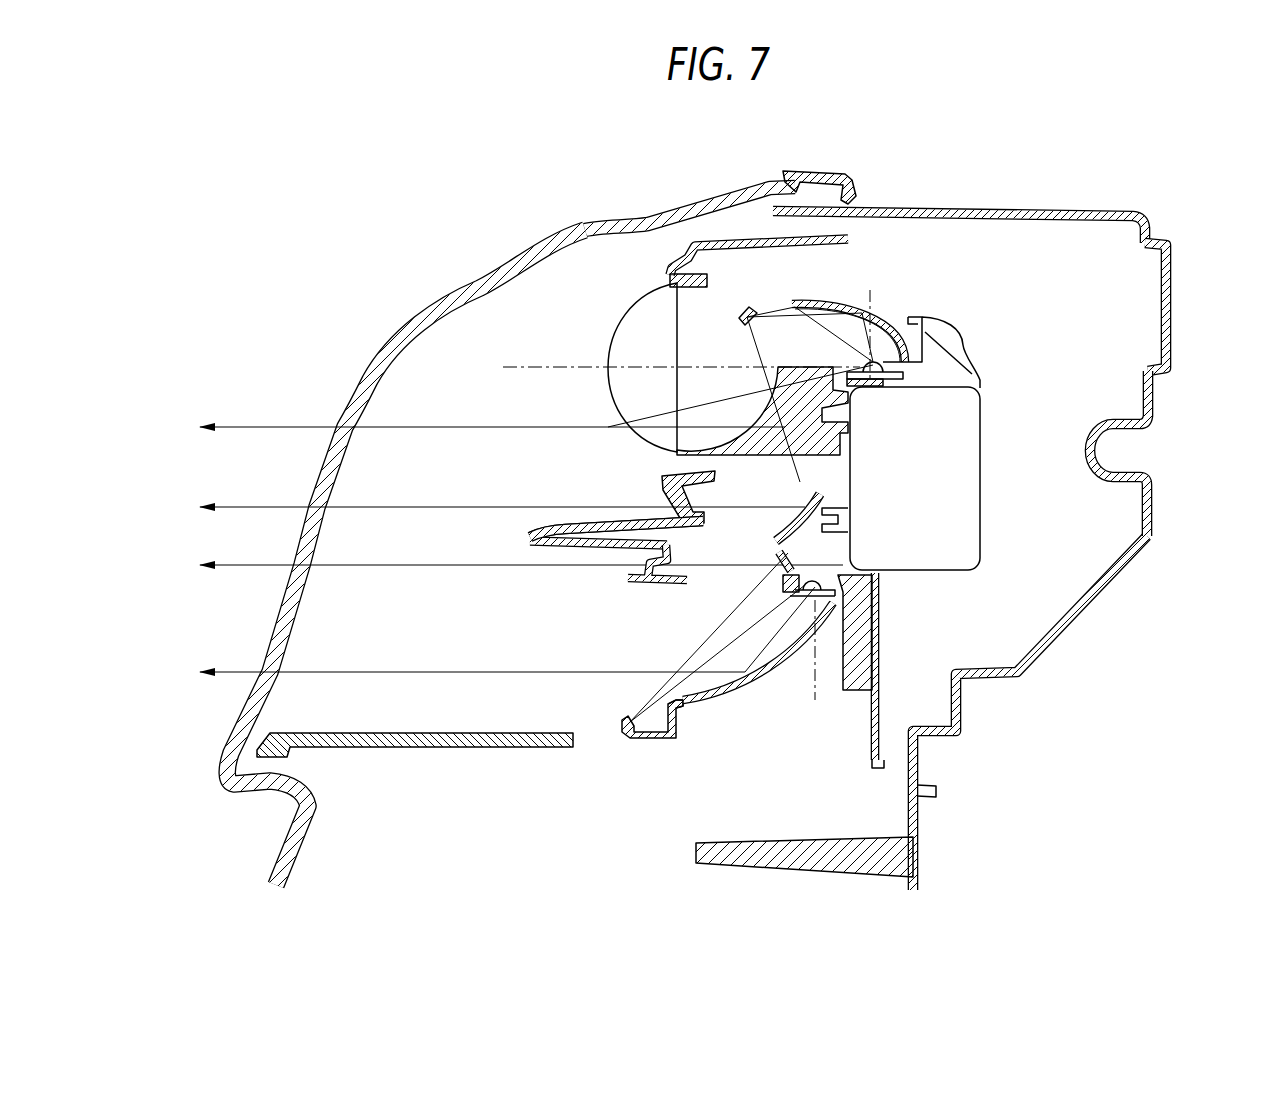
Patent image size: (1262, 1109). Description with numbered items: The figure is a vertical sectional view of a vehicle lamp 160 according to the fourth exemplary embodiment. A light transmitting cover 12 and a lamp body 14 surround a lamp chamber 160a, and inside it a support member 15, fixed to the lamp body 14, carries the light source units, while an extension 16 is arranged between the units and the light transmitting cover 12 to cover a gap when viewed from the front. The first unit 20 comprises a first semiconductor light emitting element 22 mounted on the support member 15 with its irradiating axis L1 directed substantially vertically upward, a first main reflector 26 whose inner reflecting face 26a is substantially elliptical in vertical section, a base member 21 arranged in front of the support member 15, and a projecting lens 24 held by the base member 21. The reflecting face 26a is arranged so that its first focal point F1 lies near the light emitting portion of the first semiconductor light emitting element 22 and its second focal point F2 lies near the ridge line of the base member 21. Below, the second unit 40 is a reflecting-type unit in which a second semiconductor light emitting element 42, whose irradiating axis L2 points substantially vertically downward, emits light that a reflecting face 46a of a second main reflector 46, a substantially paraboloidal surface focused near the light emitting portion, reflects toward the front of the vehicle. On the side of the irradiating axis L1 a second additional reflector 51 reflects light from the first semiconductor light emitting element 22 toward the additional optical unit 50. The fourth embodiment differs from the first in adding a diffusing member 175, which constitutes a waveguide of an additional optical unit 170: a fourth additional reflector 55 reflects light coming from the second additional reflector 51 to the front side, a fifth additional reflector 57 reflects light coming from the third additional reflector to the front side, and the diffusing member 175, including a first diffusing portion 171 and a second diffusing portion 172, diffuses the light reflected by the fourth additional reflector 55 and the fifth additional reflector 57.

The light transmitting cover 12 is at (667, 214).
The lamp body 14 is at (957, 207).
The support member 15 is at (886, 610).
The extension 16 is at (494, 753).
The first unit 20 is at (580, 326).
The base member 21 is at (830, 462).
The first semiconductor light emitting element 22 is at (962, 338).
The projecting lens 24 is at (648, 318).
The first main reflector 26 is at (889, 350).
The reflecting face 26a is at (884, 322).
The second unit 40 is at (630, 681).
The second semiconductor light emitting element 42 is at (828, 608).
The second main reflector 46 is at (767, 676).
The reflecting face 46a is at (684, 702).
The additional optical unit 50 is at (591, 578).
The second additional reflector 51 is at (762, 312).
The fourth additional reflector 55 is at (777, 525).
The fifth additional reflector 57 is at (787, 557).
The vehicle lamp 160 is at (1172, 192).
The lamp chamber 160a is at (1140, 311).
The additional optical unit 170 is at (522, 539).
The first diffusing portion 171 is at (685, 484).
The second diffusing portion 172 is at (680, 560).
The diffusing member 175 is at (596, 515).
The first focal point F1 is at (878, 376).
The second focal point F2 is at (748, 338).
The irradiating axis L1 is at (873, 292).
The irradiating axis L2 is at (813, 683).